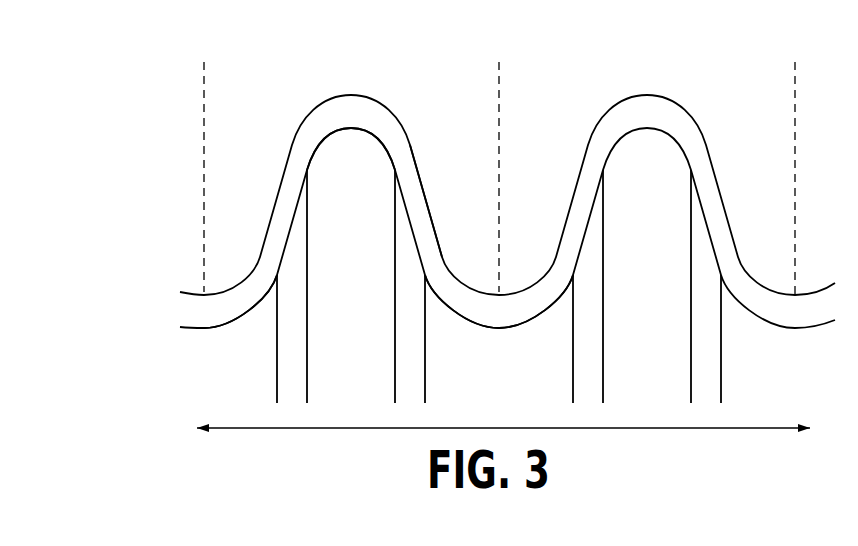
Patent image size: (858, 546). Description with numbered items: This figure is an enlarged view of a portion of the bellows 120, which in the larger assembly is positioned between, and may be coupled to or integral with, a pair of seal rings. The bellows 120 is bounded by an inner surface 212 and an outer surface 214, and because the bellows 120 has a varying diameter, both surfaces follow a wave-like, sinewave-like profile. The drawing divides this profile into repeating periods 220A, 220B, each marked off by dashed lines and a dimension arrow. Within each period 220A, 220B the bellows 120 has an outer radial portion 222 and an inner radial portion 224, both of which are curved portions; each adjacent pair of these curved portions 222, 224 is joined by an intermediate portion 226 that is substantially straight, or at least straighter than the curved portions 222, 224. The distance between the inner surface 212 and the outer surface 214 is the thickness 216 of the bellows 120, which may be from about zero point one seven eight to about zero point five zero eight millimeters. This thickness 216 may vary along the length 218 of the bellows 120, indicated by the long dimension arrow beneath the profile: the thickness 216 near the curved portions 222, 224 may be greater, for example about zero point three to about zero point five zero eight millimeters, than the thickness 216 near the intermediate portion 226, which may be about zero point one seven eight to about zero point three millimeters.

The bellows 120 is at (142, 60).
The inner surface 212 is at (198, 327).
The outer surface 214 is at (232, 282).
The thickness 216 is at (245, 320).
The length 218 is at (233, 430).
The period 220A is at (499, 68).
The period 220B is at (795, 68).
The outer radial portion 222 is at (355, 130).
The inner radial portion 224 is at (488, 331).
The intermediate portion 226 is at (427, 193).